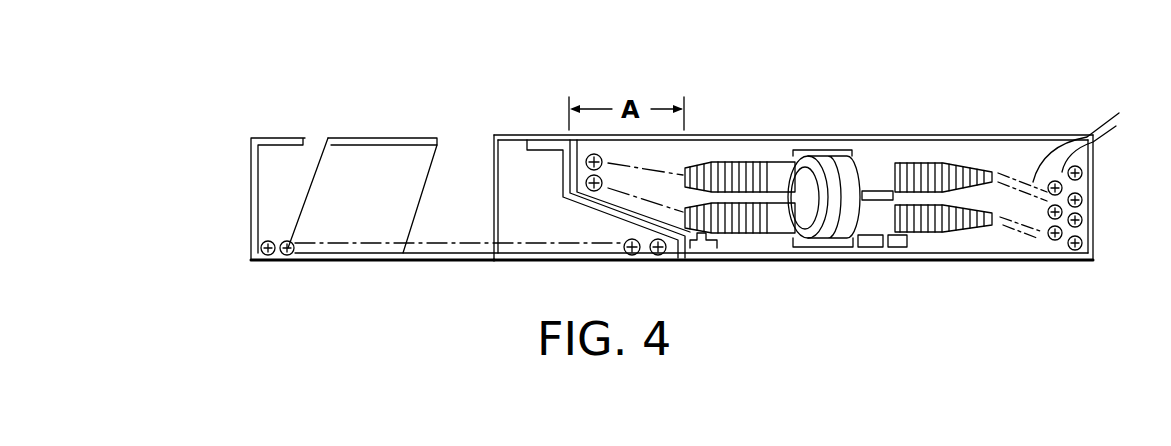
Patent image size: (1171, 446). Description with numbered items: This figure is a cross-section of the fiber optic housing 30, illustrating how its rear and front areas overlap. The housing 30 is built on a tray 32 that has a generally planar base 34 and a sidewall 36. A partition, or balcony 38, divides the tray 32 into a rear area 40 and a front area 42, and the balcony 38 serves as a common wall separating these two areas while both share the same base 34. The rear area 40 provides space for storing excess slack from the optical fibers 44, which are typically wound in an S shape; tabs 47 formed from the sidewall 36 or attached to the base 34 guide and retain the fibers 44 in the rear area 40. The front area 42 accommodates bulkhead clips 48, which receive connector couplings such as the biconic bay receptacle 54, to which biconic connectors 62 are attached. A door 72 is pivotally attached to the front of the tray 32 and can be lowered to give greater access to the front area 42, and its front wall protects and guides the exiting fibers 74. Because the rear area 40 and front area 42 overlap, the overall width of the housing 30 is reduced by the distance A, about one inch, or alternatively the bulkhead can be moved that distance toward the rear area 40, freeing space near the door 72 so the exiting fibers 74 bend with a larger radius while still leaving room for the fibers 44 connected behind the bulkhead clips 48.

The fiber optic housing 30 is at (516, 98).
The tray 32 is at (285, 274).
The base 34 is at (813, 260).
The sidewall 36 is at (250, 197).
The balcony 38 is at (548, 138).
The rear area 40 is at (387, 225).
The front area 42 is at (888, 150).
The optical fibers 44 is at (320, 243).
The tabs 47 is at (340, 137).
The bulkhead clips 48 is at (817, 152).
The biconic bay receptacle 54 is at (869, 150).
The biconic connectors 62 is at (710, 168).
The door 72 is at (1011, 263).
The exiting fibers 74 is at (1092, 143).